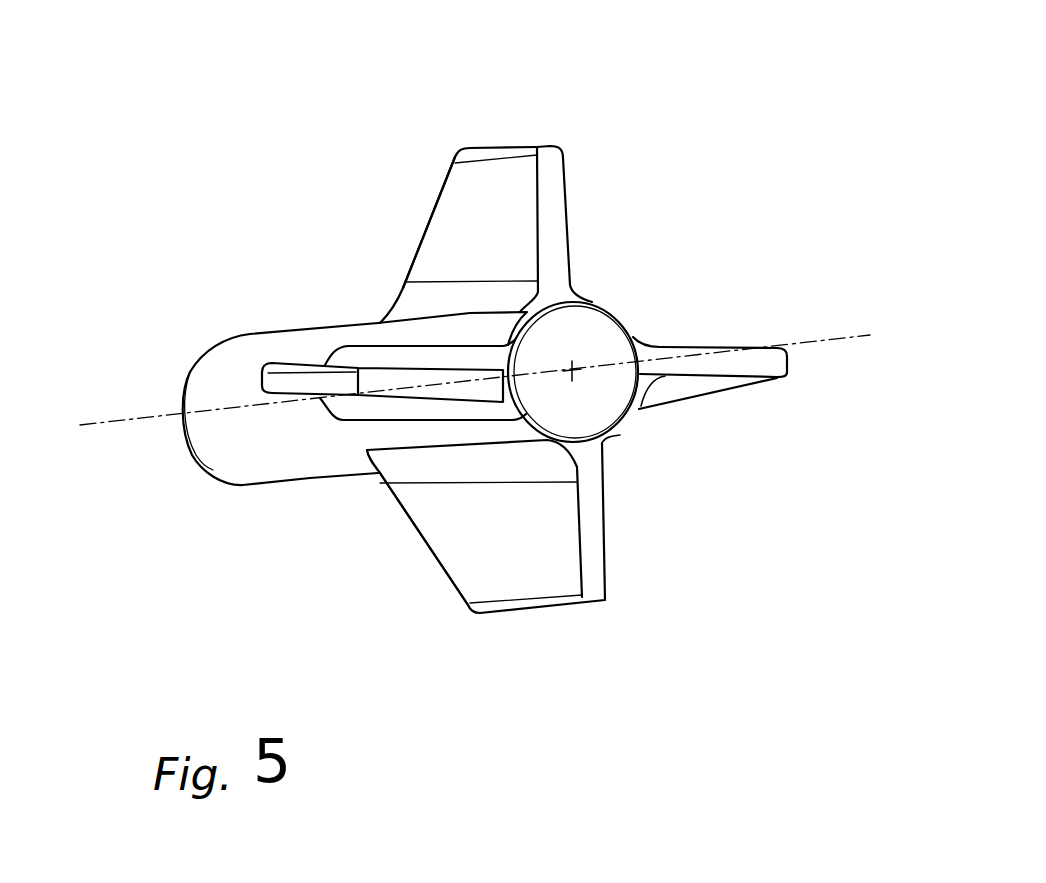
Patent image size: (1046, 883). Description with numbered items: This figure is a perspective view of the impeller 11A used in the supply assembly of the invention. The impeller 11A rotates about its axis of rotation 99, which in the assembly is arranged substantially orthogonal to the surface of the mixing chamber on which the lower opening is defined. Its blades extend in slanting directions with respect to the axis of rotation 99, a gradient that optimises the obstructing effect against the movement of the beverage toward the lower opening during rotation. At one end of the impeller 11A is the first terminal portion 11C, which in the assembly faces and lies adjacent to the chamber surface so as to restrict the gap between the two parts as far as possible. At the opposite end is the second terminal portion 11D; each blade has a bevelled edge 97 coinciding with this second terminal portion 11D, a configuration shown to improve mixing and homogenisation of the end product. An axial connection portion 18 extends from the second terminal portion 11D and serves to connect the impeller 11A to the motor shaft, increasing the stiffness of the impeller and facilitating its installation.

The impeller 11A is at (292, 115).
The first terminal portion 11C is at (567, 198).
The second terminal portion 11D is at (383, 290).
The bevelled edge 97 is at (423, 230).
The axis of rotation 99 is at (148, 423).
The axial connection portion 18 is at (290, 472).